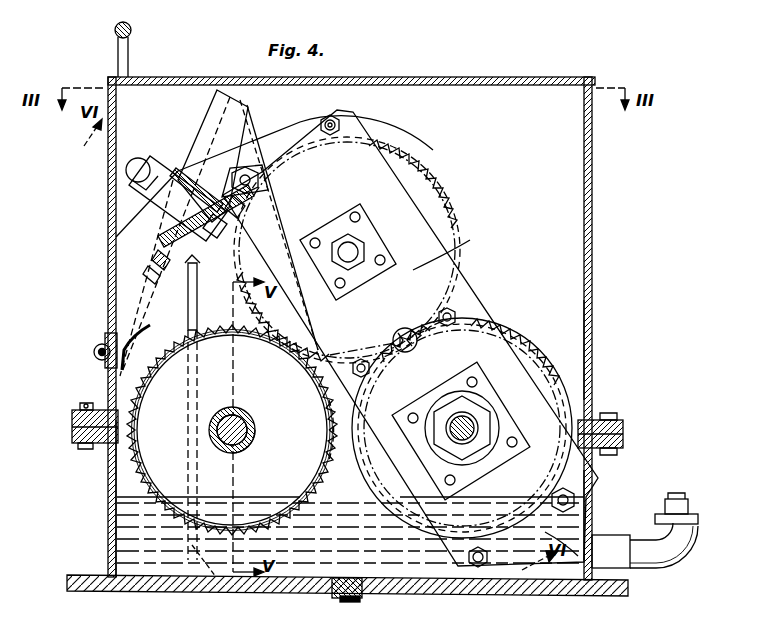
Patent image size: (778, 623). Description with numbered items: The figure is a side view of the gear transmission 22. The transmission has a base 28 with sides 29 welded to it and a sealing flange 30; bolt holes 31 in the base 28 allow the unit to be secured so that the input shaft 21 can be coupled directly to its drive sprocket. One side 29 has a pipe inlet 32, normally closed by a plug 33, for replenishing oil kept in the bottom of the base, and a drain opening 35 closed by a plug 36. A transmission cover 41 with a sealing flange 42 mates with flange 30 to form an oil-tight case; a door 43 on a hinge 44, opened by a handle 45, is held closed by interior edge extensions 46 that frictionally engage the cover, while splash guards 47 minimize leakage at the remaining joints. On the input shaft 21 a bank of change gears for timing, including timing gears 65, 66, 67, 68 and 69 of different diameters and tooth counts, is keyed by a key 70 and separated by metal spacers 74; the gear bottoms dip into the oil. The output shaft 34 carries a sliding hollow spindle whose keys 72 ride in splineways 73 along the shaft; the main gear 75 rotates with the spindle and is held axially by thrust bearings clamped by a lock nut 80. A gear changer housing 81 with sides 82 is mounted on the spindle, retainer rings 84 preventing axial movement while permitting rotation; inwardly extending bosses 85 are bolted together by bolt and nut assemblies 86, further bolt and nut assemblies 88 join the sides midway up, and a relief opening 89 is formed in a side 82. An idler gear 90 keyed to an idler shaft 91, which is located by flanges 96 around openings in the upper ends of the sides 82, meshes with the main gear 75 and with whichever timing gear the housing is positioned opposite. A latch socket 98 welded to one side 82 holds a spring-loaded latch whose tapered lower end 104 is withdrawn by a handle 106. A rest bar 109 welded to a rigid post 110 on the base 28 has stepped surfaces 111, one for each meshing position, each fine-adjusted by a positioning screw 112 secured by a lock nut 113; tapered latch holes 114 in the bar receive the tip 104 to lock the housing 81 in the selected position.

The input shaft 21 is at (250, 420).
The gear transmission 22 is at (593, 238).
The base 28 is at (160, 591).
The sides 29 is at (108, 508).
The sealing flange 30 is at (72, 435).
The bolt holes 31 is at (612, 430).
The pipe inlet 32 is at (614, 537).
The plug 33 is at (676, 498).
The output shaft 34 is at (475, 444).
The drain opening 35 is at (342, 570).
The plug 36 is at (347, 598).
The transmission cover 41 is at (593, 353).
The sealing flange 42 is at (78, 418).
The door 43 is at (108, 216).
The hinge 44 is at (94, 352).
The handle 45 is at (130, 33).
The interior edge extensions 46 is at (258, 108).
The splash guards 47 is at (236, 92).
The timing gear 65 is at (189, 512).
The timing gear 66 is at (304, 500).
The timing gear 67 is at (336, 448).
The timing gear 68 is at (242, 318).
The timing gear 69 is at (142, 380).
The key 70 is at (238, 414).
The keys 72 is at (470, 416).
The splineways 73 is at (455, 442).
The metal spacers 74 is at (256, 432).
The main gear 75 is at (521, 338).
The lock nut 80 is at (492, 426).
The gear changer housing 81 is at (458, 247).
The sides 82 is at (400, 210).
The retainer rings 84 is at (455, 393).
The bosses 85 is at (300, 135).
The bolt and nut assemblies 86 is at (342, 120).
The bolt and nut assemblies 88 is at (458, 312).
The relief opening 89 is at (405, 328).
The idler gear 90 is at (410, 160).
The idler shaft 91 is at (340, 255).
The flanges 96 is at (337, 218).
The latch socket 98 is at (191, 178).
The tapered lower end 104 is at (248, 212).
The handle 106 is at (139, 158).
The rest bar 109 is at (225, 252).
The post 110 is at (213, 582).
The stepped surfaces 111 is at (252, 192).
The adjustable positioning screws 112 is at (167, 268).
The lock nut 113 is at (165, 256).
The tapered latch holes 114 is at (196, 194).